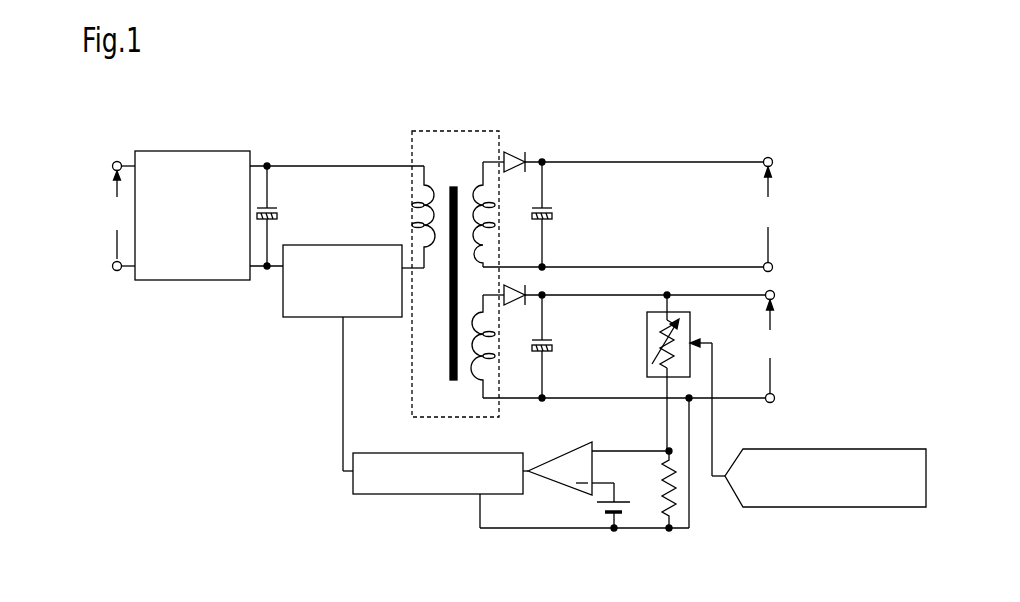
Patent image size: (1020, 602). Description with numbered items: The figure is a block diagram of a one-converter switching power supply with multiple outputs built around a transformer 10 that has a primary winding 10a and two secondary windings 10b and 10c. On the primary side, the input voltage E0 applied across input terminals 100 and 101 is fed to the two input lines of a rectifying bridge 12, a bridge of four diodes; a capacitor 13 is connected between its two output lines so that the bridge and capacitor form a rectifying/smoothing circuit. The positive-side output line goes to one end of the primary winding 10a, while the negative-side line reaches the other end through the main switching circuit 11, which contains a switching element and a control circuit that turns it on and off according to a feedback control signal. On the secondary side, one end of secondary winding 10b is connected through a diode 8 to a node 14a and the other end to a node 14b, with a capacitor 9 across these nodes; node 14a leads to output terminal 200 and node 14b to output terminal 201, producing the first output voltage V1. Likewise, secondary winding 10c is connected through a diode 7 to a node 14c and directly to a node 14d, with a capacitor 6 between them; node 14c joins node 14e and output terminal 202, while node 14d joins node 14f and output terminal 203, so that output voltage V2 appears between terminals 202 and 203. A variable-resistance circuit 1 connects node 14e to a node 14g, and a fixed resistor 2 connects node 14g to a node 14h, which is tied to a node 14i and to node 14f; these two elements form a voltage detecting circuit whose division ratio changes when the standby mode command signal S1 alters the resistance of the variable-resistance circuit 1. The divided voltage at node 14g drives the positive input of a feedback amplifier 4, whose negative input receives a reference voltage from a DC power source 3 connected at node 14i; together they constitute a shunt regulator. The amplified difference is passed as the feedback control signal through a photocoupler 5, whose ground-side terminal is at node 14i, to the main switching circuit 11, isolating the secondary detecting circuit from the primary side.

The variable-resistance circuit 1 is at (690, 322).
The resistor 2 is at (660, 478).
The DC power source 3 is at (596, 508).
The feedback amplifier 4 is at (568, 453).
The photocoupler 5 is at (432, 494).
The capacitor 6 is at (548, 338).
The diode 7 is at (511, 307).
The diode 8 is at (511, 174).
The capacitor 9 is at (548, 206).
The transformer 10 is at (447, 131).
The primary winding 10a is at (432, 185).
The secondary winding 10b is at (475, 228).
The secondary winding 10c is at (461, 356).
The main switching circuit 11 is at (318, 245).
The rectifying bridge 12 is at (195, 151).
The capacitor 13 is at (272, 207).
The node 14a is at (542, 158).
The node 14b is at (544, 264).
The node 14c is at (544, 292).
The node 14d is at (544, 395).
The node 14e is at (664, 292).
The node 14f is at (692, 401).
The node 14g is at (665, 449).
The node 14h is at (669, 532).
The node 14i is at (614, 532).
The input terminal 100 is at (117, 161).
The input terminal 101 is at (117, 271).
The output terminal 200 is at (770, 158).
The output terminal 201 is at (773, 265).
The output terminal 202 is at (775, 293).
The output terminal 203 is at (775, 396).
The input voltage E0 is at (118, 215).
The first output voltage V1 is at (770, 214).
The output voltage V2 is at (771, 346).
The standby mode command signal S1 is at (768, 449).